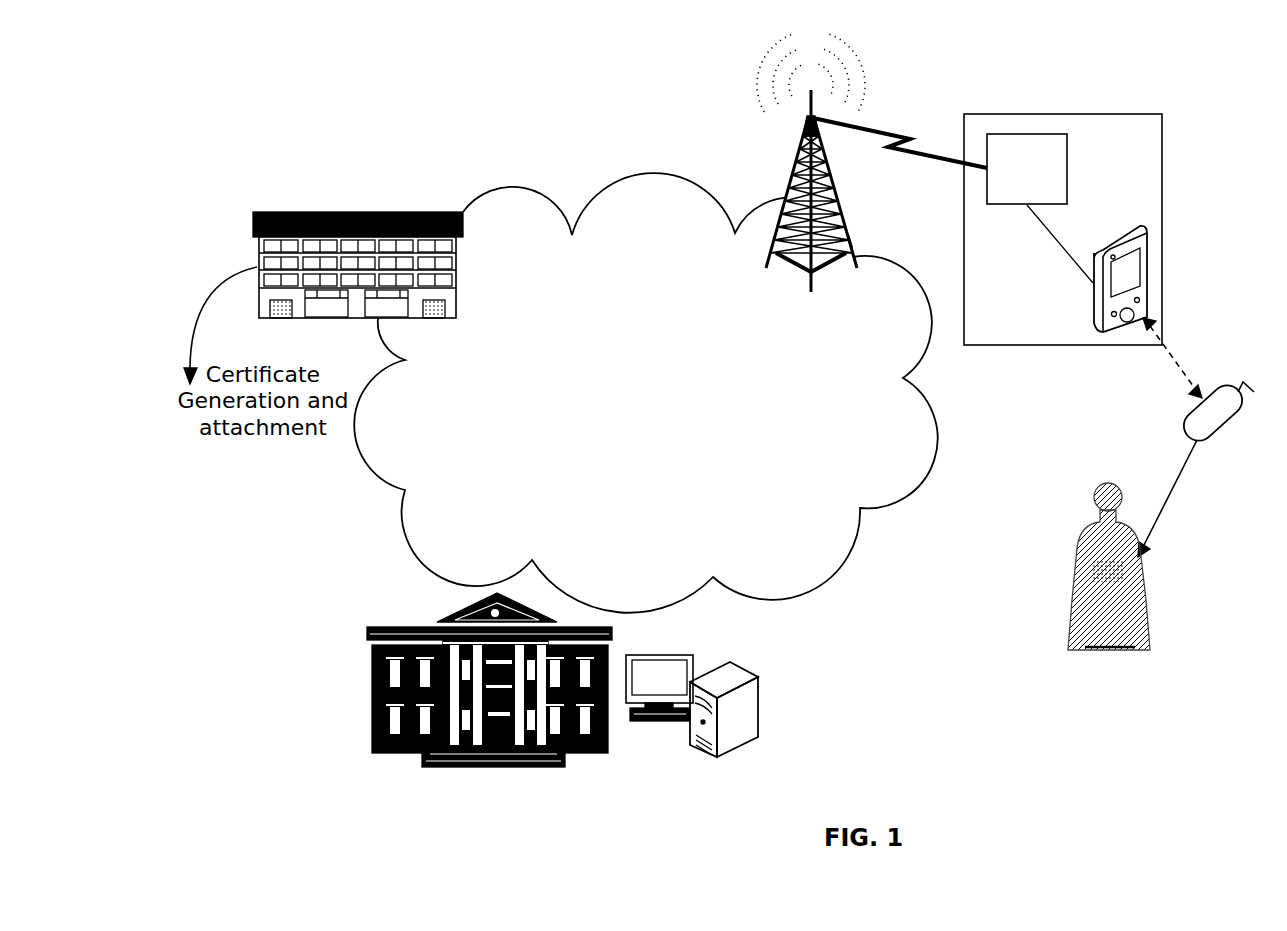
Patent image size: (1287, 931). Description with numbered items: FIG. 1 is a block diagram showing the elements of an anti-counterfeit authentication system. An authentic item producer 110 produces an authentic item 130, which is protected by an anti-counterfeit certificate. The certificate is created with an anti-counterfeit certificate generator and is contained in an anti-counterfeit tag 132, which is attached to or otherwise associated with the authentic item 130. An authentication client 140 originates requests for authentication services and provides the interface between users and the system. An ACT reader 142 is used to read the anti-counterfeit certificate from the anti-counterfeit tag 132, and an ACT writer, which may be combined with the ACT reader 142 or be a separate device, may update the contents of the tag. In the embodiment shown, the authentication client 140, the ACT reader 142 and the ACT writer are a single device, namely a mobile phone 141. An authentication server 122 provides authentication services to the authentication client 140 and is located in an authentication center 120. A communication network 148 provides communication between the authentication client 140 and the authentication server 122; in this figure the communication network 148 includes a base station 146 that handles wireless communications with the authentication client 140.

The authentic item producer 110 is at (253, 215).
The authentication center 120 is at (598, 752).
The authentication server 122 is at (760, 683).
The authentic item 130 is at (1078, 575).
The anti-counterfeit tag 132 is at (1187, 417).
The authentication client 140 is at (1003, 134).
The mobile phone 141 is at (1123, 113).
The ACT reader 142 is at (1094, 310).
The base station 146 is at (797, 185).
The communication network 148 is at (830, 560).